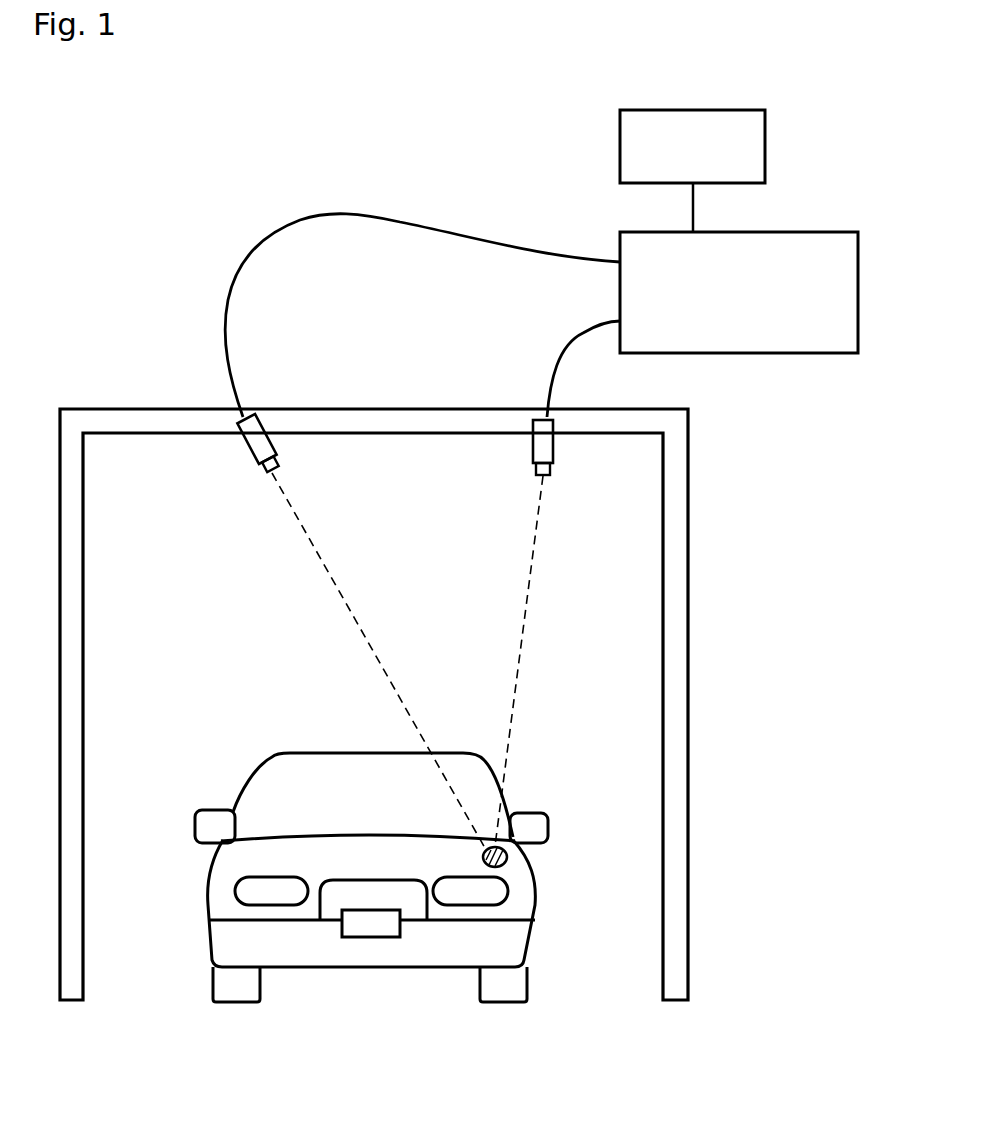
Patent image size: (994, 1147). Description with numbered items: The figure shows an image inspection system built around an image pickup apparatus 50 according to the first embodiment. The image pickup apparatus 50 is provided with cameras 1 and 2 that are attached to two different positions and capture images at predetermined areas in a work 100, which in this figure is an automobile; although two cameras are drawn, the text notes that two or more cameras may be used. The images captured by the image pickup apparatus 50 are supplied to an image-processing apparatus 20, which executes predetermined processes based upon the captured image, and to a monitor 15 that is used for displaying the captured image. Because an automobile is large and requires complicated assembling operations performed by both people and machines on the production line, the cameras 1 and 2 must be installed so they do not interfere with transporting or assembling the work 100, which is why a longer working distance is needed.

The camera 1 is at (252, 448).
The camera 2 is at (553, 450).
The monitor 15 is at (767, 153).
The image-processing apparatus 20 is at (858, 291).
The image pickup apparatus 50 is at (580, 400).
The work 100 is at (540, 800).